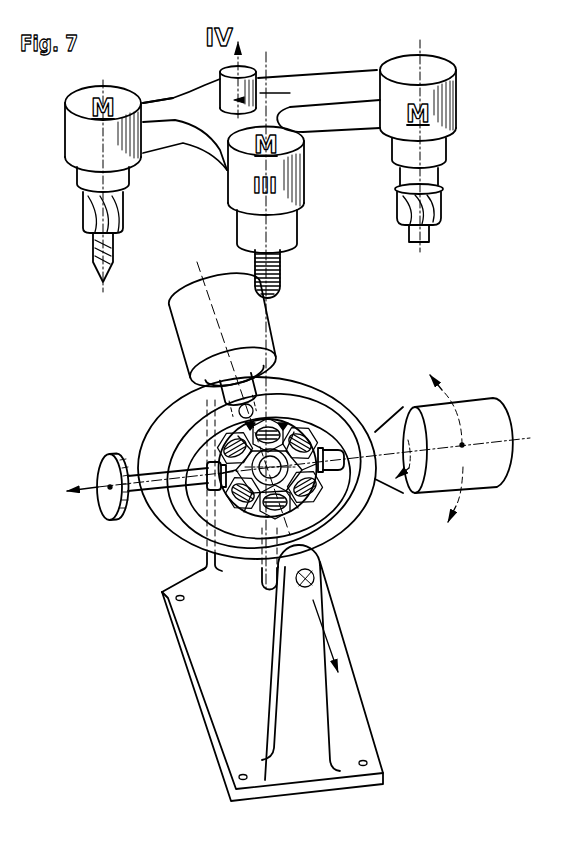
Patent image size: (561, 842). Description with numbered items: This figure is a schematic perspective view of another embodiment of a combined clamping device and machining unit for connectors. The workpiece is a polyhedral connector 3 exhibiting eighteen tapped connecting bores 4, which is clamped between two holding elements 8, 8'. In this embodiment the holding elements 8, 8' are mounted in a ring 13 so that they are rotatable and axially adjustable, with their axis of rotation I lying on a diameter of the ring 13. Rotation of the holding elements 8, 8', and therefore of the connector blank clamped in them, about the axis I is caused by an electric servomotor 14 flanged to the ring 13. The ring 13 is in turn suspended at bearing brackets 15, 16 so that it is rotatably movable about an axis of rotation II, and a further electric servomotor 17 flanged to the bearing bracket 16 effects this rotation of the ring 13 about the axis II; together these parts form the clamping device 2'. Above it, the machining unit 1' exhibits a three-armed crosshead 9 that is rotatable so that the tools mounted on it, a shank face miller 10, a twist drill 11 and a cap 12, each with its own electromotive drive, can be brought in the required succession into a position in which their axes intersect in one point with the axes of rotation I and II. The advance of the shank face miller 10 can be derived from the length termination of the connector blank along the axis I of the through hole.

The machining unit 1' is at (258, 149).
The clamping device 2' is at (354, 355).
The polyhedral connector 3 is at (231, 497).
The tapped connecting bores 4 is at (277, 491).
The holding element 8 is at (161, 506).
The holding element 8' is at (352, 504).
The three-armed crosshead 9 is at (180, 135).
The shank face miller 10 is at (428, 211).
The twist drill 11 is at (95, 261).
The cap 12 is at (284, 276).
The ring 13 is at (183, 423).
The electric servomotor 14 is at (482, 410).
The bearing bracket 15 is at (292, 657).
The bearing bracket 16 is at (227, 568).
The electric servomotor 17 is at (193, 322).
The axis of rotation I is at (297, 465).
The axis of rotation II is at (260, 465).